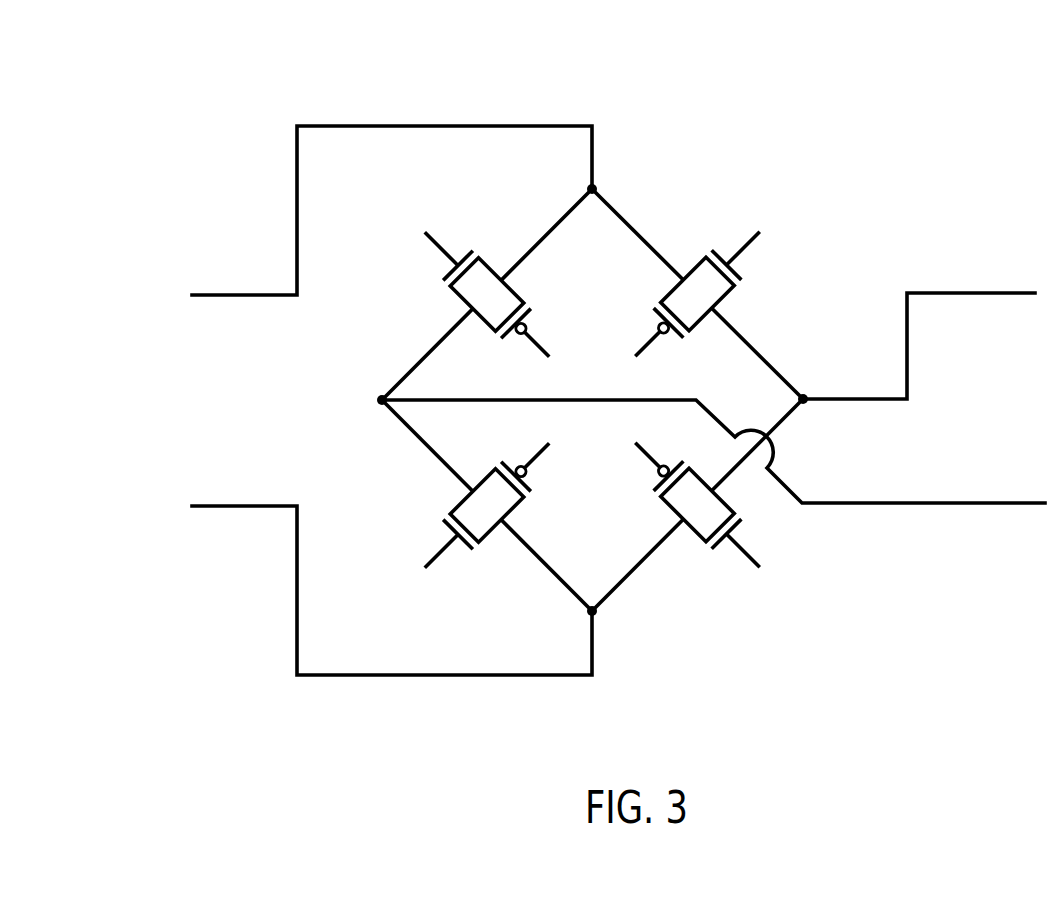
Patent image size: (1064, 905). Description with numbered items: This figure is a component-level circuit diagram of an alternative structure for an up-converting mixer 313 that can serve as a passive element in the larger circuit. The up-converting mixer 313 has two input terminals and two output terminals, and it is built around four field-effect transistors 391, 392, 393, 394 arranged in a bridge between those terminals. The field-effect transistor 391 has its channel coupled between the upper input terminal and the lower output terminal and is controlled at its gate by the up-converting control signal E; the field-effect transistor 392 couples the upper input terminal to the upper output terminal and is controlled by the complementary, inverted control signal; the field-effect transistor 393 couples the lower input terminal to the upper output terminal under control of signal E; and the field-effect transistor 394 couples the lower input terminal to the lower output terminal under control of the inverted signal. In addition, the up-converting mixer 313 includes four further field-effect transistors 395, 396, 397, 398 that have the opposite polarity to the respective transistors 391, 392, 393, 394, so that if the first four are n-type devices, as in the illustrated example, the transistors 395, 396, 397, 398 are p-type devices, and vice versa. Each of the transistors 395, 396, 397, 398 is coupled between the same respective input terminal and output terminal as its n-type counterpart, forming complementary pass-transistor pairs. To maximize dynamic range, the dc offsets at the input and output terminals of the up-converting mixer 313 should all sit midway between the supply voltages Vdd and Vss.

The up-converting mixer 313 is at (618, 349).
The field-effect transistor 391 is at (497, 283).
The field-effect transistor 392 is at (681, 278).
The field-effect transistor 393 is at (679, 522).
The field-effect transistor 394 is at (504, 522).
The field-effect transistor 395 is at (508, 300).
The field-effect transistor 396 is at (672, 300).
The field-effect transistor 397 is at (672, 498).
The field-effect transistor 398 is at (508, 498).